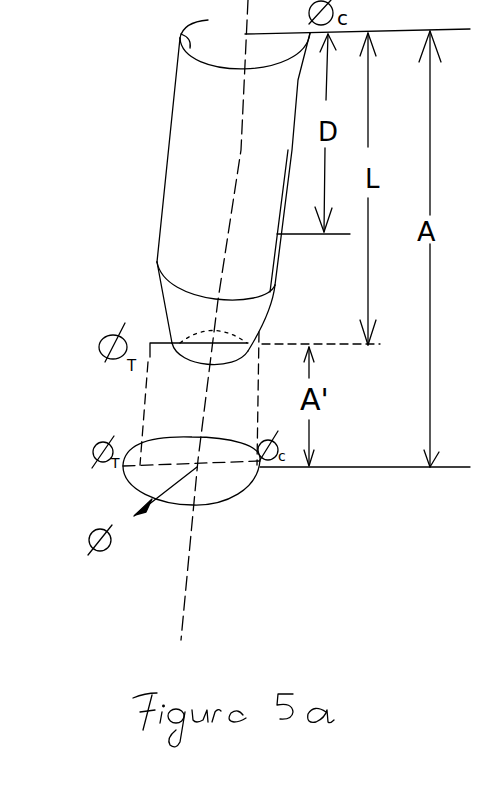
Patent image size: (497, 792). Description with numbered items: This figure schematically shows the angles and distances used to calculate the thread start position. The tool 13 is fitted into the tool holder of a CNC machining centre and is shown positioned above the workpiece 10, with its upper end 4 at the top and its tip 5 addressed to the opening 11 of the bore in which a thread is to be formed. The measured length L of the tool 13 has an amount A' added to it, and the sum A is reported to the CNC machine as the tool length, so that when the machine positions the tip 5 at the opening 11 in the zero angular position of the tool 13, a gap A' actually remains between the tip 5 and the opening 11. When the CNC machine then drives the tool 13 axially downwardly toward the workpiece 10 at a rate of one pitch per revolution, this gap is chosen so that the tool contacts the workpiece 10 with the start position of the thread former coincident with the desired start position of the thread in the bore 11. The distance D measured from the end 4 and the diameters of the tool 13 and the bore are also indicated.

The tool shank end face 4 is at (177, 35).
The tool 13 is at (170, 167).
The tip 5 is at (193, 363).
The workpiece 10 is at (152, 560).
The opening 11 is at (202, 503).